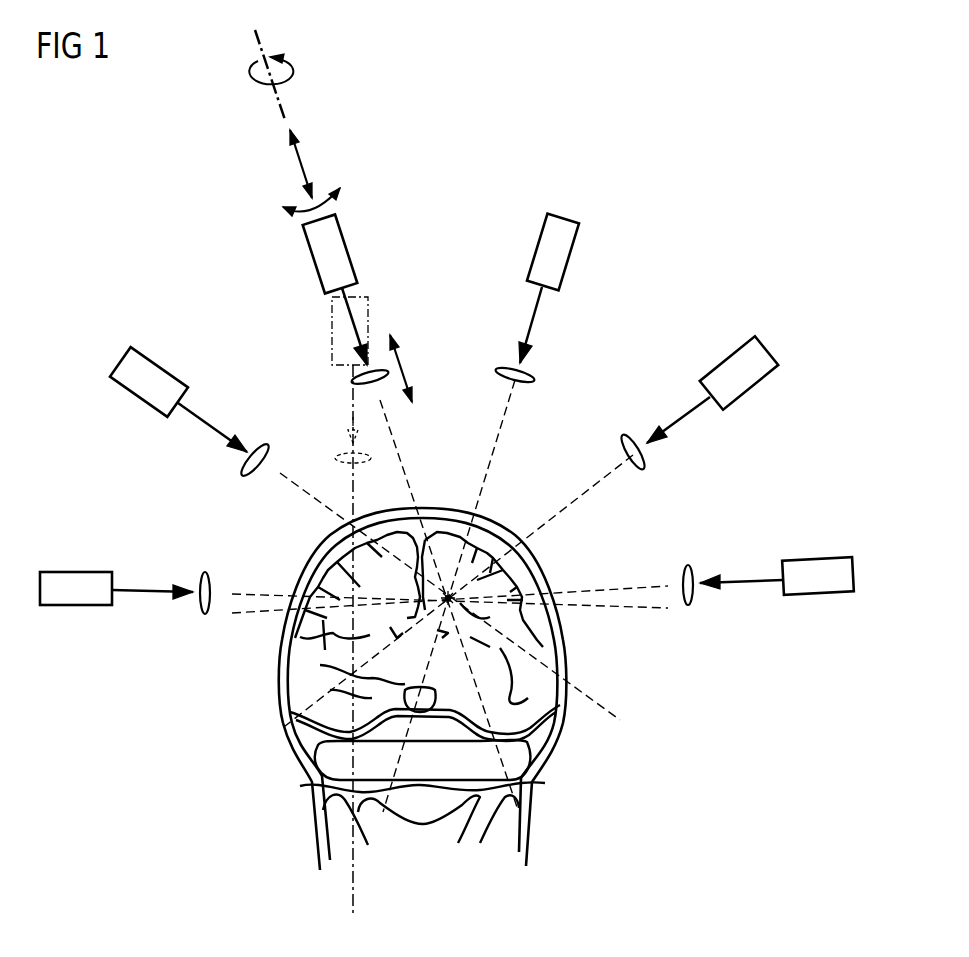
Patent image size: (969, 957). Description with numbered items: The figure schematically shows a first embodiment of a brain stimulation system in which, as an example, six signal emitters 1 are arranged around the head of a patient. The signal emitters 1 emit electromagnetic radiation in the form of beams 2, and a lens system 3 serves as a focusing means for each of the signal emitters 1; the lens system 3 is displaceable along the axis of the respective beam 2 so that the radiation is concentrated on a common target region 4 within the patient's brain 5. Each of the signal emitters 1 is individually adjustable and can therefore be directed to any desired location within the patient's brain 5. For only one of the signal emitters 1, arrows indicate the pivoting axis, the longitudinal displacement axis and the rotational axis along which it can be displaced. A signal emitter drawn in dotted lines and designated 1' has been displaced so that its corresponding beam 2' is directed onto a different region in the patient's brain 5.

The signal emitter 1 is at (447, 429).
The displaced signal emitter 1' is at (328, 331).
The beam 2 is at (447, 464).
The displaced beam 2' is at (383, 640).
The lens system 3 is at (372, 382).
The common target region 4 is at (453, 600).
The patient's brain 5 is at (520, 693).